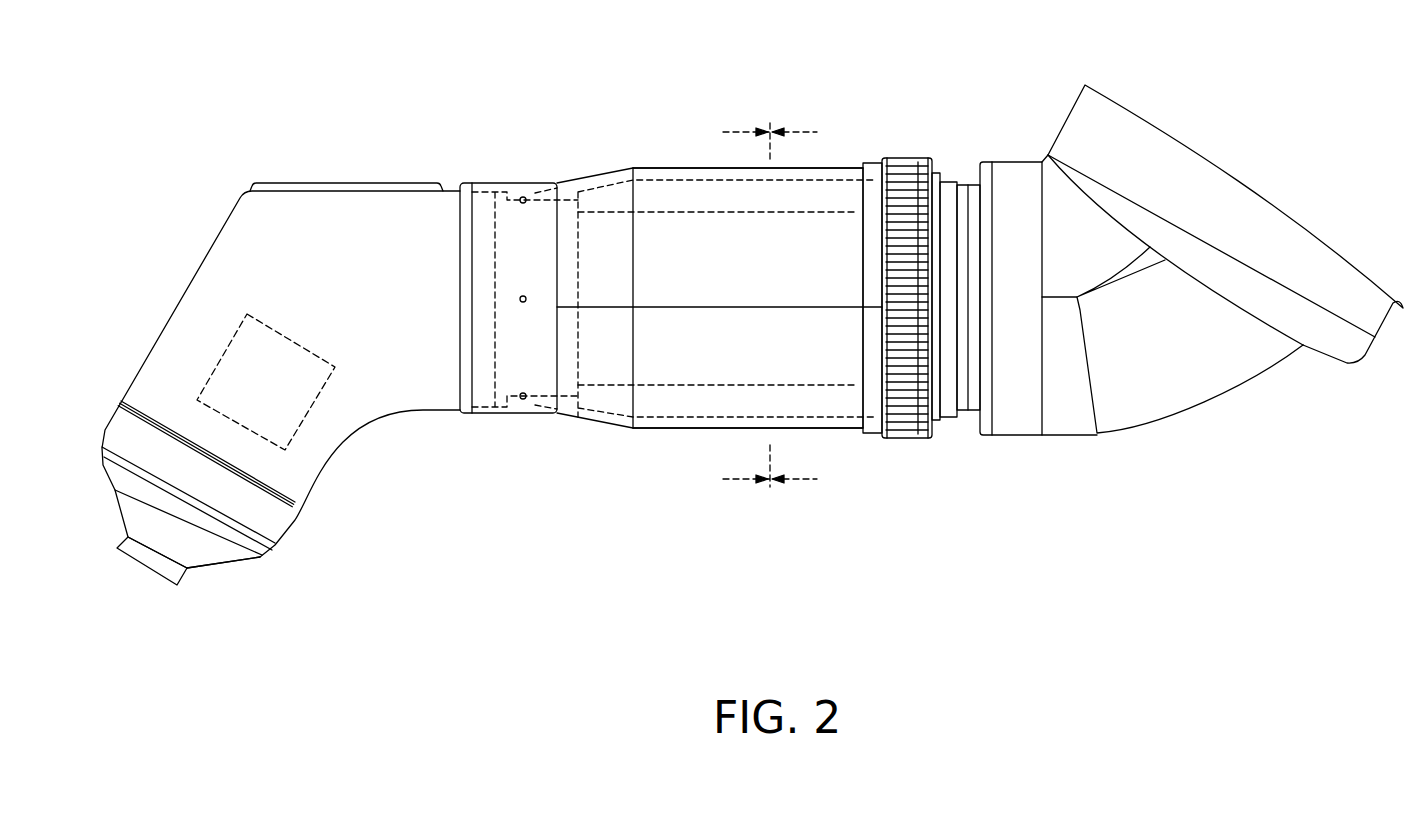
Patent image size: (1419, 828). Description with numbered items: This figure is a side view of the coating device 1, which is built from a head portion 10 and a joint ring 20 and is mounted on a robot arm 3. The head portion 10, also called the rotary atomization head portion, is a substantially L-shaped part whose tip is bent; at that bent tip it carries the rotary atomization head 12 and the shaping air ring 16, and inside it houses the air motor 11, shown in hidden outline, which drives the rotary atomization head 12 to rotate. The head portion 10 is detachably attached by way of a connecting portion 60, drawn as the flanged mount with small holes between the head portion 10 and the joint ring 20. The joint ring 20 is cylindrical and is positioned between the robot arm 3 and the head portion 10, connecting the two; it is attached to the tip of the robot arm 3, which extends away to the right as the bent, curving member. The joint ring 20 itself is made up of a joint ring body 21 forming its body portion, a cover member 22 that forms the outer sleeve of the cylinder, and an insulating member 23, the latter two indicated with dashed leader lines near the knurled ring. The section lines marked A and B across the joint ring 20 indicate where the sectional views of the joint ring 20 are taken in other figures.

The coating device 1 is at (582, 106).
The robot arm 3 is at (1178, 418).
The head portion 10 is at (402, 427).
The air motor 11 is at (227, 347).
The rotary atomization head 12 is at (183, 579).
The shaping air ring 16 is at (210, 556).
The joint ring 20 is at (768, 319).
The joint ring body 21 is at (845, 228).
The cover member 22 is at (667, 167).
The insulating member 23 is at (827, 210).
The connecting portion 60 is at (523, 432).